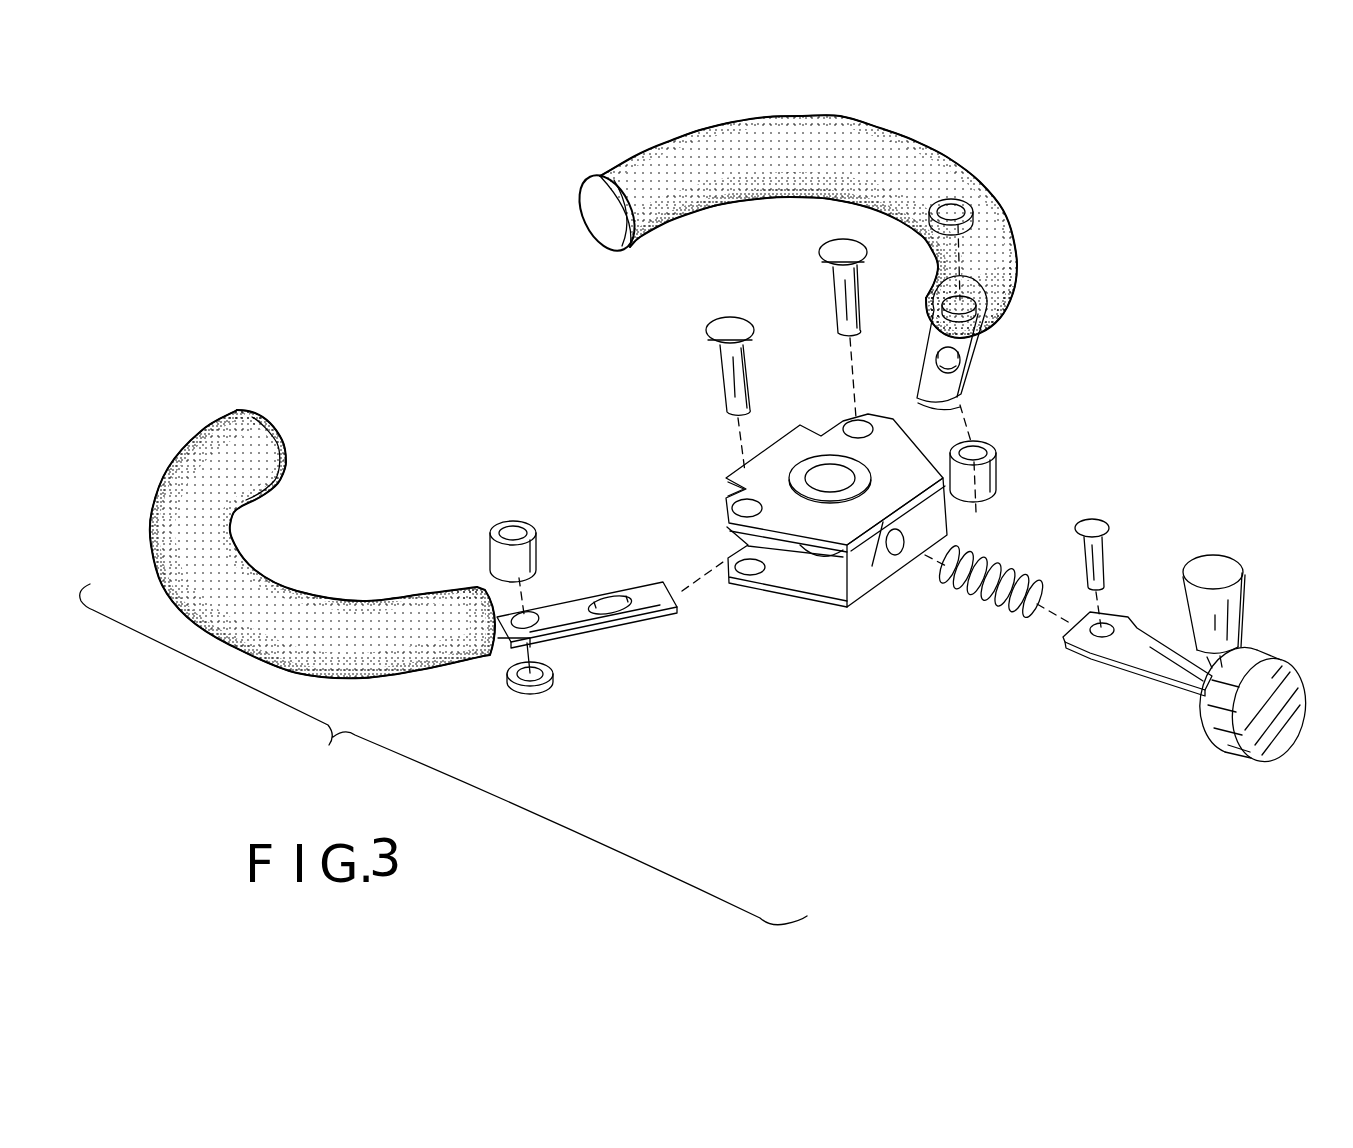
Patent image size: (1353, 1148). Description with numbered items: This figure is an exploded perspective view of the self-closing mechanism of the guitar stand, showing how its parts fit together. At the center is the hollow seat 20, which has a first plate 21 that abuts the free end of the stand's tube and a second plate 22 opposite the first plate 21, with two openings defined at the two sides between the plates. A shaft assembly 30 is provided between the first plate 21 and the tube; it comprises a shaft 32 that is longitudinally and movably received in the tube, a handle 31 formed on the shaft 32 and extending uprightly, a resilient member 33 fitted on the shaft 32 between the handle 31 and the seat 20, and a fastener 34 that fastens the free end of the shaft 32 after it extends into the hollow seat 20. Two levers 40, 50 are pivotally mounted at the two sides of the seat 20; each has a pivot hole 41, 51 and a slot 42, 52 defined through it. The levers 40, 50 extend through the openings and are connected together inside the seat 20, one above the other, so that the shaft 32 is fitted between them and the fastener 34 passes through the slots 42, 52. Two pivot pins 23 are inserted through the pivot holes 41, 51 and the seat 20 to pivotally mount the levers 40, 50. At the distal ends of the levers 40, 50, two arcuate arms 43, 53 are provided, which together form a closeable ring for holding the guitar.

The hollow seat 20 is at (802, 528).
The first plate 21 is at (870, 589).
The second plate 22 is at (724, 490).
The pivot pin 23 is at (853, 293).
The shaft assembly 30 is at (1188, 630).
The handle 31 is at (1250, 616).
The shaft 32 is at (1172, 680).
The resilient member 33 is at (1008, 613).
The fastener 34 is at (1105, 553).
The lever 40 is at (593, 614).
The pivot hole 41 is at (537, 617).
The slot 42 is at (618, 612).
The arcuate arm 43 is at (383, 668).
The lever 50 is at (1004, 343).
The pivot hole 51 is at (982, 299).
The slot 52 is at (953, 362).
The arcuate arm 53 is at (1003, 218).